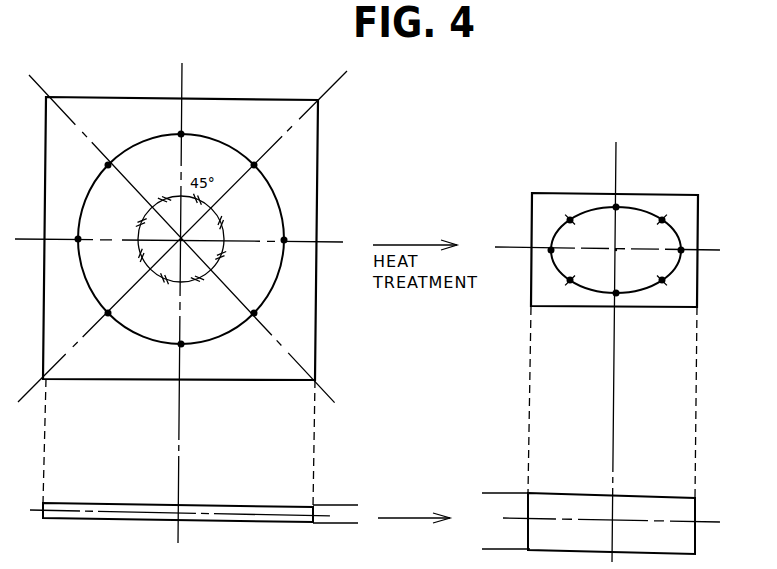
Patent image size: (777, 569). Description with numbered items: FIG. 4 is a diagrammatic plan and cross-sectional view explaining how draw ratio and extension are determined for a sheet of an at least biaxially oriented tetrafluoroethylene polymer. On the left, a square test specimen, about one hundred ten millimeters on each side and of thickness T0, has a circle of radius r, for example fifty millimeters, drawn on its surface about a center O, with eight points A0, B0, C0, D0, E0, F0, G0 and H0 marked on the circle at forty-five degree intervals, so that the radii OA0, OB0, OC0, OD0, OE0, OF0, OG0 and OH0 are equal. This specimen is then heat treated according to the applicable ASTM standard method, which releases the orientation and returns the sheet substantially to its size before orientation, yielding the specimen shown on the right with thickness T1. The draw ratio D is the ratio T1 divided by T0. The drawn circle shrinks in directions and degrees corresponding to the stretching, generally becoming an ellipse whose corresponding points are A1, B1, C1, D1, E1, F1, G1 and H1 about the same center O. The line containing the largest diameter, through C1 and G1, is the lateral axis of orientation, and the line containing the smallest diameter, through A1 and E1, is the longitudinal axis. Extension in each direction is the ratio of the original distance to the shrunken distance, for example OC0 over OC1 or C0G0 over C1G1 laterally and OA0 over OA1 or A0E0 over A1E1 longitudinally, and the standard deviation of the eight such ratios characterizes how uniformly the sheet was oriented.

The point A0 on original circle A0 is at (191, 127).
The point B0 on original circle B0 is at (267, 171).
The point C0 on original circle C0 is at (293, 250).
The point D0 on original circle D0 is at (252, 329).
The point E0 on original circle E0 is at (171, 354).
The point F0 on original circle F0 is at (94, 317).
The point G0 on original circle G0 is at (68, 232).
The point H0 on original circle H0 is at (108, 153).
The center of circle O is at (405, 254).
The thickness of specimen (a) T0 is at (342, 539).
The point A1 on shrunken ellipse A1 is at (617, 206).
The point B1 on shrunken ellipse B1 is at (674, 218).
The point C1 on shrunken ellipse C1 is at (681, 251).
The point D1 on shrunken ellipse D1 is at (666, 292).
The point E1 on shrunken ellipse E1 is at (615, 295).
The point F1 on shrunken ellipse F1 is at (559, 282).
The point G1 on shrunken ellipse G1 is at (544, 239).
The point H1 on shrunken ellipse H1 is at (572, 211).
The thickness of specimen (b) T1 is at (494, 493).